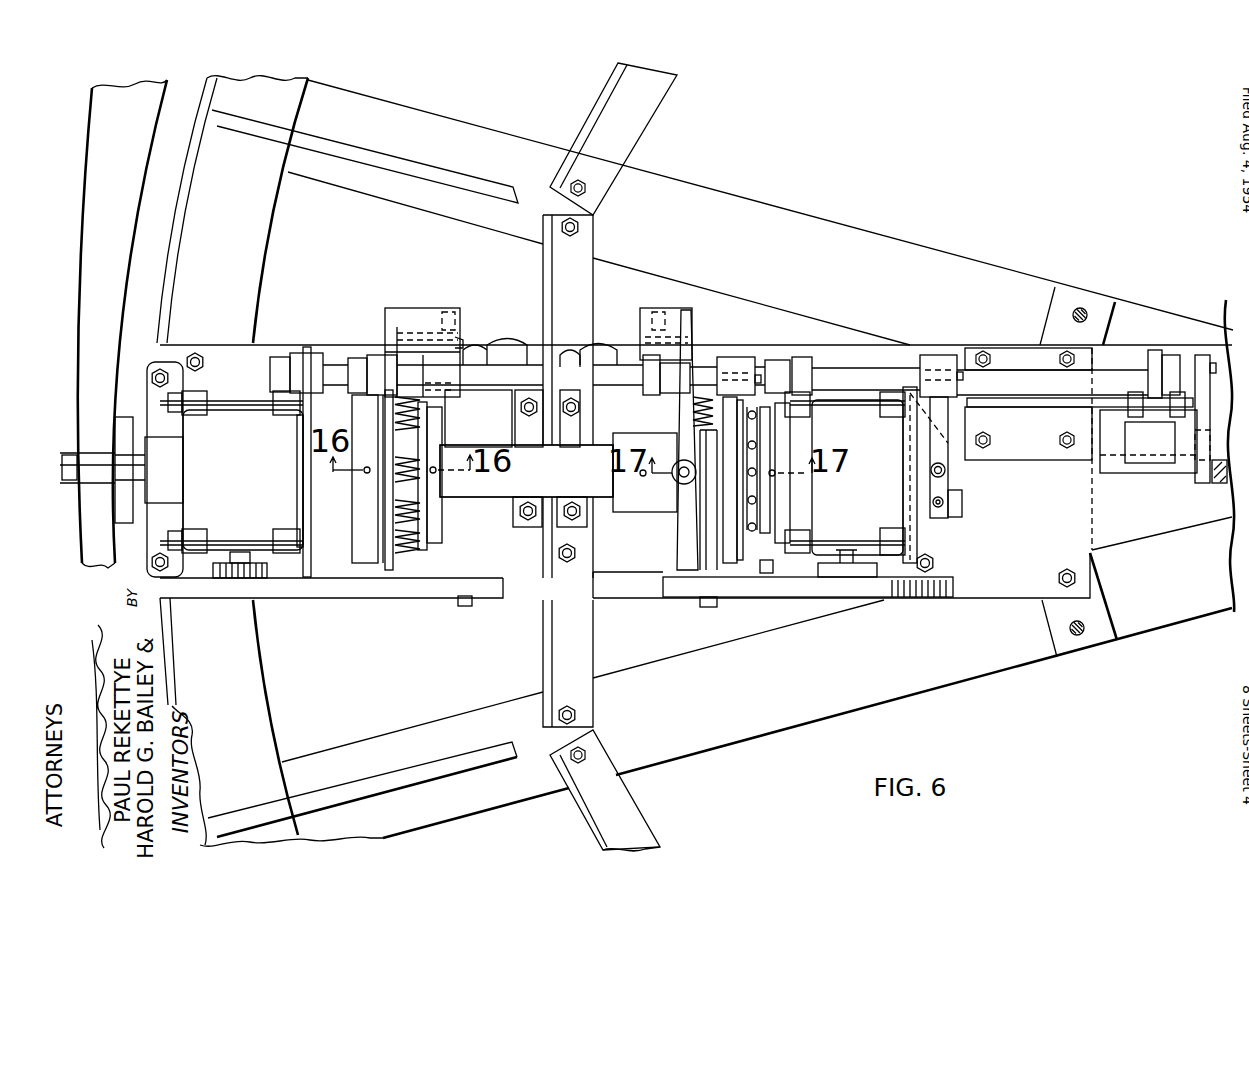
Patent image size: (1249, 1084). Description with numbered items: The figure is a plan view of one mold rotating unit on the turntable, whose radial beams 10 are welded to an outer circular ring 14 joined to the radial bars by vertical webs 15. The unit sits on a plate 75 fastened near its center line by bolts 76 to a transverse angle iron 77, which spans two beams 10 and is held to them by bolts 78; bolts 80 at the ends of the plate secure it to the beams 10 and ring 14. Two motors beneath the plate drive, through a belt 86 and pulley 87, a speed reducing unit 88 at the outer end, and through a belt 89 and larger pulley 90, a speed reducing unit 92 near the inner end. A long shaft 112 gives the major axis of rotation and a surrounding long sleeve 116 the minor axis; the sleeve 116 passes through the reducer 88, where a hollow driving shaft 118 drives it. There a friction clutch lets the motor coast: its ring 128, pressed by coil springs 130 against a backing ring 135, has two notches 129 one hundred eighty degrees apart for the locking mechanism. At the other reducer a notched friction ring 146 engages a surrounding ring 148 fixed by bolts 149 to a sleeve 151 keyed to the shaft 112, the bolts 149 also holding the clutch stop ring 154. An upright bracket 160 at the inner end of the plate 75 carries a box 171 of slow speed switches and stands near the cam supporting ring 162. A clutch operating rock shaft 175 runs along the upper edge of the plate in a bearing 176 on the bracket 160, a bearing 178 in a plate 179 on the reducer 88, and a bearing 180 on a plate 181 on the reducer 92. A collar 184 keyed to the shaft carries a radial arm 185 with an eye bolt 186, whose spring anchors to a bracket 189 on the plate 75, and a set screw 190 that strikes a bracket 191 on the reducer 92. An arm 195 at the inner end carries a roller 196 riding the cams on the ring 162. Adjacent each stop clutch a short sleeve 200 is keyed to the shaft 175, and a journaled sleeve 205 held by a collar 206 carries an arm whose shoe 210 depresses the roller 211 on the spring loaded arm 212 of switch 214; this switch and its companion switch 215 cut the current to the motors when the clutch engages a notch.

The radial beams 10 is at (772, 213).
The outer circular ring 14 is at (252, 272).
The vertical webs 15 is at (433, 168).
The plate 75 is at (625, 574).
The bolts 76 is at (570, 347).
The transverse angle iron 77 is at (588, 645).
The bolts 78 is at (580, 186).
The bolts 80 is at (195, 355).
The belt 86 is at (362, 588).
The pulley 87 is at (286, 597).
The speed reducing unit 88 is at (240, 422).
The belt 89 is at (758, 588).
The pulley 90 is at (838, 593).
The speed reducing unit 92 is at (850, 413).
The long shaft 112 is at (76, 448).
The long sleeve 116 is at (79, 518).
The hollow driving shaft 118 is at (173, 493).
The disk shaped ring 128 is at (397, 562).
The notches 129 is at (385, 478).
The coil springs 130 is at (423, 546).
The backing ring 135 is at (433, 515).
The rollers 146 is at (757, 503).
The surrounding ring 148 is at (722, 571).
The bolts 149 is at (705, 571).
The sleeve 151 is at (658, 500).
The clutch stop ring 154 is at (686, 545).
The upright bracket 160 is at (1040, 410).
The cam supporting ring 162 is at (1210, 493).
The box 171 is at (1153, 454).
The clutch operating rock shaft 175 is at (1007, 370).
The bearing 176 is at (1170, 347).
The bearing 178 is at (318, 353).
The plate 179 is at (300, 477).
The bearing 180 is at (795, 355).
The plate 181 is at (790, 512).
The collar 184 is at (950, 345).
The radial arm 185 is at (945, 454).
The eye bolt 186 is at (942, 517).
The bracket 189 is at (962, 495).
The set screw 190 is at (930, 471).
The bracket 191 is at (918, 433).
The arm 195 is at (1203, 348).
The roller 196 is at (1210, 522).
The short sleeve 200 is at (748, 355).
The sleeve 205 is at (722, 357).
The collar 206 is at (647, 375).
The shoe 210 is at (400, 308).
The roller 211 is at (447, 312).
The spring loaded arm 212 is at (458, 340).
The switch 214 is at (607, 436).
The switch 215 is at (478, 418).